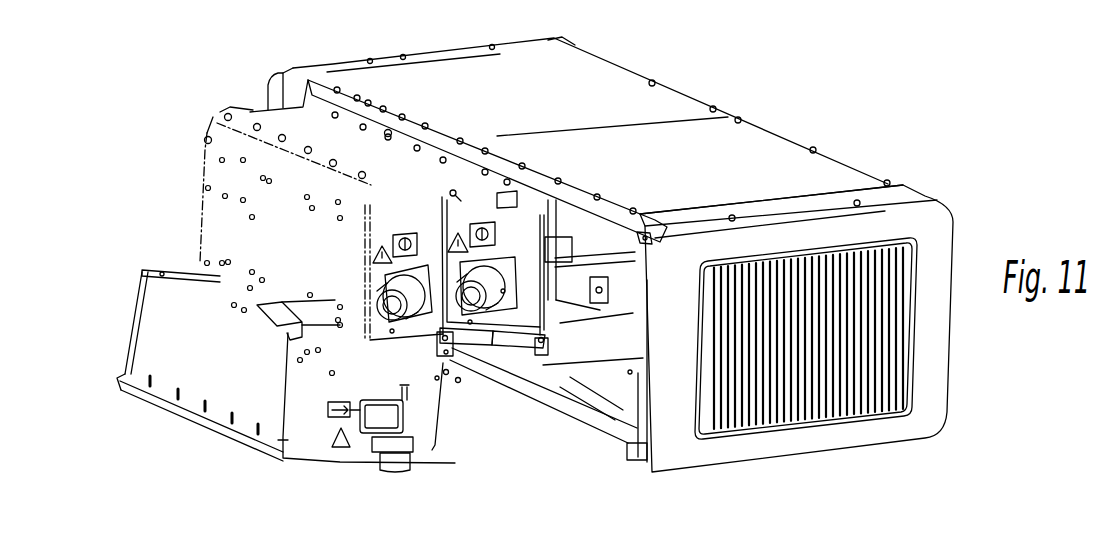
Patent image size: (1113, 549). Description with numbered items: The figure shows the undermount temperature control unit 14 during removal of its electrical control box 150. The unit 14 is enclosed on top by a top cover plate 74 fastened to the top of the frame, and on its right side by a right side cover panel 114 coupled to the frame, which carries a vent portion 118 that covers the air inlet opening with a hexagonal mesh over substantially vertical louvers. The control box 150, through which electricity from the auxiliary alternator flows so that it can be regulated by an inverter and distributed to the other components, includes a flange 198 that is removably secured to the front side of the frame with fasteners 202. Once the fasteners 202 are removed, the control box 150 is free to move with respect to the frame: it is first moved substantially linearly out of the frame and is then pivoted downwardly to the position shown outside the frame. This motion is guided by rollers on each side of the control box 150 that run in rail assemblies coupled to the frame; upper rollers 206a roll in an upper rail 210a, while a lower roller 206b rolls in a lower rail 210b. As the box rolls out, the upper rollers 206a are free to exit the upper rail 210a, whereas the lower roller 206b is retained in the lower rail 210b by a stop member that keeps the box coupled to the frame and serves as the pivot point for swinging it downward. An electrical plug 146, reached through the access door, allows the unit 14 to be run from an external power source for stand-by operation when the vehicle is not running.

The undermount temperature control unit 14 is at (808, 114).
The top cover plate 74 is at (613, 95).
The flange 198 is at (404, 142).
The fasteners 202 is at (389, 130).
The electrical control box 150 is at (153, 327).
The electrical plug 146 is at (398, 462).
The upper rollers 206a is at (437, 342).
The lower roller 206b is at (545, 340).
The upper rail 210a is at (477, 333).
The lower rail 210b is at (523, 337).
The right side cover panel 114 is at (933, 388).
The vent portion 118 is at (870, 398).